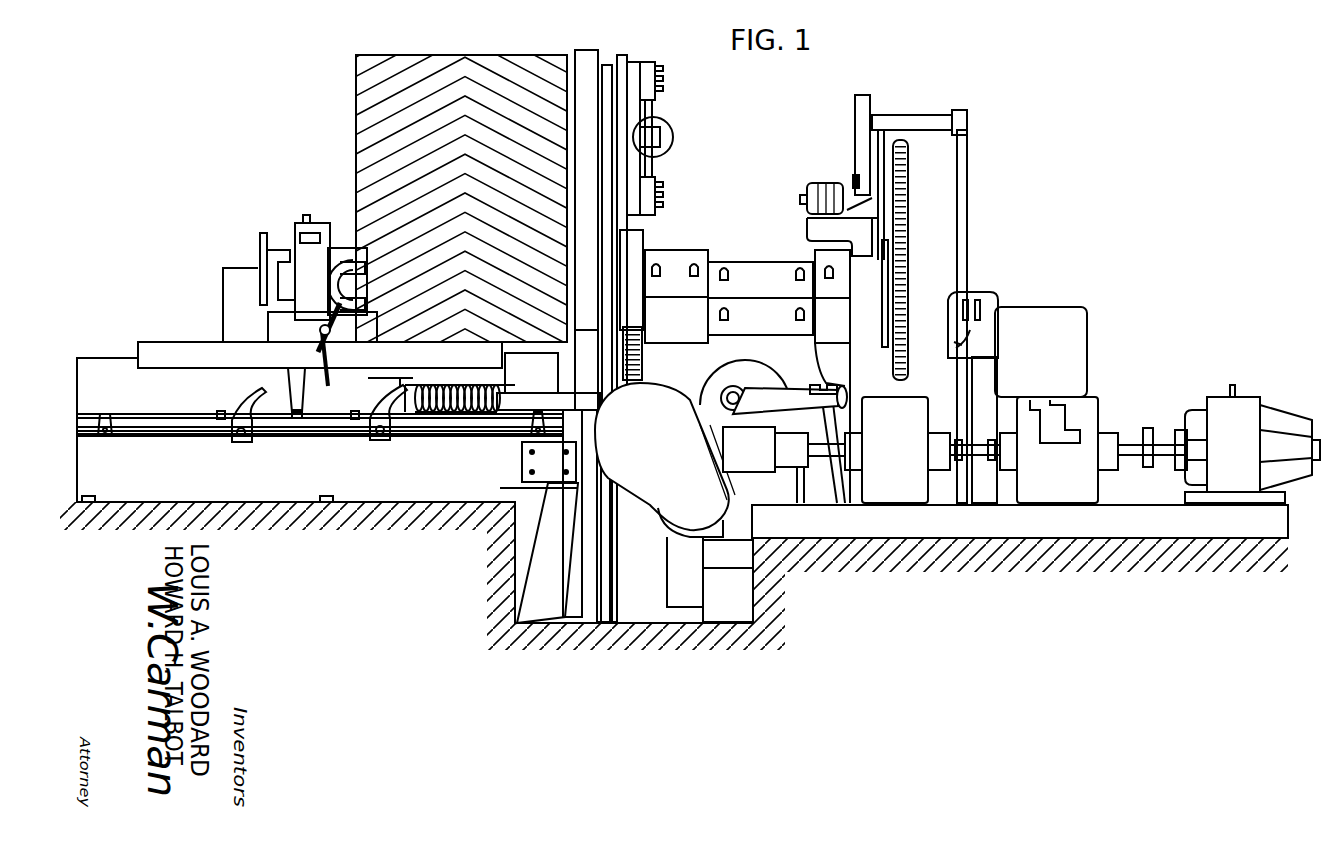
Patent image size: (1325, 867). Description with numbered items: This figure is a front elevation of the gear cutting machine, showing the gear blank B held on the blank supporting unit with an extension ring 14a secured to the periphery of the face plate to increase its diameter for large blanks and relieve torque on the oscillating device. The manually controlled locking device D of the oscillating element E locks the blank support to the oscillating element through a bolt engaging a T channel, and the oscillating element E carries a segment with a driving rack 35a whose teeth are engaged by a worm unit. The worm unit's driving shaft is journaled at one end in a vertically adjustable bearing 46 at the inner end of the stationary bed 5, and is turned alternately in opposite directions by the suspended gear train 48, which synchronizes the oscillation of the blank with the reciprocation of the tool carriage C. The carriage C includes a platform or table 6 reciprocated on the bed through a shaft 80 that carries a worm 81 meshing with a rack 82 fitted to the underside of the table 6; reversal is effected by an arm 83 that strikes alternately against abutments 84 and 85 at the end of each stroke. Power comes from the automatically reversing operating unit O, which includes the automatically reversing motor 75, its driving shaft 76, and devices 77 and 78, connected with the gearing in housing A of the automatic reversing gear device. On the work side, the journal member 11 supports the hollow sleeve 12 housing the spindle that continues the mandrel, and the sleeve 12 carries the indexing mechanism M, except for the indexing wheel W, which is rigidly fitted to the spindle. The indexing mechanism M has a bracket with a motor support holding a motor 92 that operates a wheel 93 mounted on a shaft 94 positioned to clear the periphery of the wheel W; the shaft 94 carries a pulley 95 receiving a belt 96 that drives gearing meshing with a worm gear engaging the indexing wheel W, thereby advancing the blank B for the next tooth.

The extension ring 14a is at (586, 60).
The gear blank B is at (432, 193).
The manually controlled locking device D is at (665, 136).
The oscillating element E is at (628, 244).
The tool carriage C is at (276, 278).
The platform or table 6 is at (320, 380).
The arm 83 is at (340, 364).
The rack 82 is at (452, 385).
The shaft 80 is at (540, 393).
The abutment 84 is at (234, 413).
The abutment 85 is at (370, 402).
The worm 81 is at (453, 439).
The stationary bed 5 is at (460, 413).
The suspended gear train 48 is at (674, 502).
The vertically adjustable bearing 46 is at (600, 483).
The driving rack 35a is at (640, 366).
The journal member 11 is at (747, 376).
The hollow sleeve 12 is at (760, 298).
The housing of automatic reversing gear device A is at (773, 431).
The motor 92 is at (800, 201).
The wheel 93 is at (858, 116).
The shaft 94 is at (925, 128).
The pulley 95 is at (968, 118).
The belt 96 is at (967, 216).
The indexing mechanism M is at (842, 203).
The indexing wheel W is at (909, 253).
The automatically reversing operating unit O is at (1116, 380).
The driving shaft 76 is at (1131, 440).
The device of operating unit 78 is at (922, 450).
The device of operating unit 77 is at (1059, 450).
The automatically reversing motor 75 is at (1252, 444).